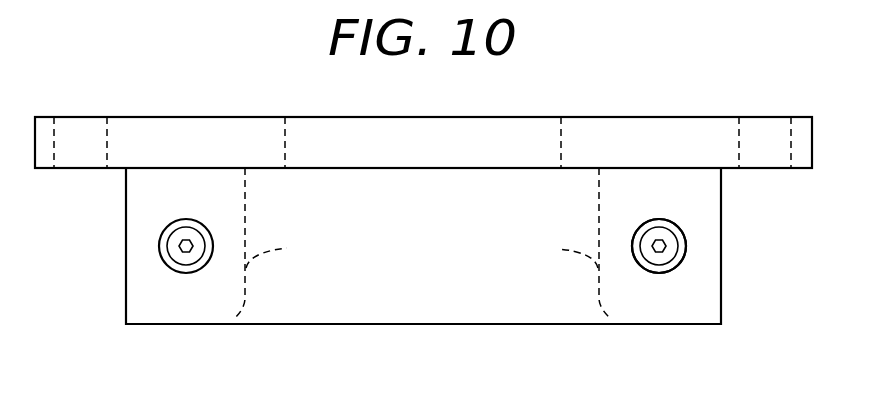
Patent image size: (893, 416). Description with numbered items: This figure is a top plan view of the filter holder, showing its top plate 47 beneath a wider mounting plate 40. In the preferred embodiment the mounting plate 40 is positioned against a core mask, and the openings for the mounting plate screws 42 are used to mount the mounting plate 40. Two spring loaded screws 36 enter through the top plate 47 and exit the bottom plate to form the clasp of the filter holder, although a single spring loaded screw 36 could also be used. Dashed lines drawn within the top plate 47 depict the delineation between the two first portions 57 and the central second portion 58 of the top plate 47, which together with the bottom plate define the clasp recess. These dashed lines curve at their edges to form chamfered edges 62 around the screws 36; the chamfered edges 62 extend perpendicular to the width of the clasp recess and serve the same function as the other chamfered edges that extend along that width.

The mounting plate 40 is at (657, 130).
The mounting plate screws 42 is at (763, 162).
The top plate 47 is at (358, 324).
The second portion 58 is at (437, 254).
The chamfered edges 62 is at (422, 243).
The first portions 57 is at (233, 208).
The spring loaded screws 36 is at (684, 260).